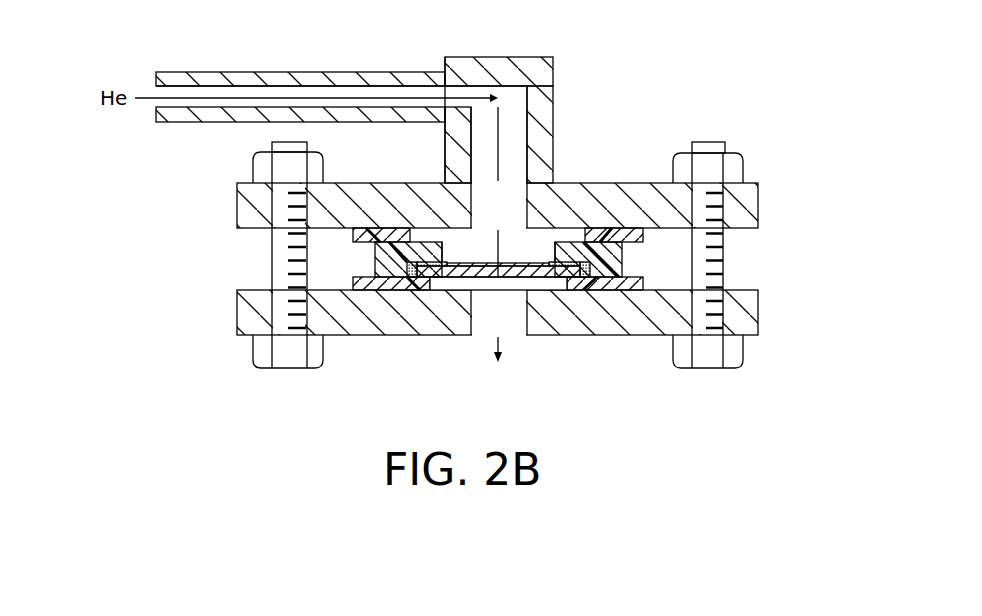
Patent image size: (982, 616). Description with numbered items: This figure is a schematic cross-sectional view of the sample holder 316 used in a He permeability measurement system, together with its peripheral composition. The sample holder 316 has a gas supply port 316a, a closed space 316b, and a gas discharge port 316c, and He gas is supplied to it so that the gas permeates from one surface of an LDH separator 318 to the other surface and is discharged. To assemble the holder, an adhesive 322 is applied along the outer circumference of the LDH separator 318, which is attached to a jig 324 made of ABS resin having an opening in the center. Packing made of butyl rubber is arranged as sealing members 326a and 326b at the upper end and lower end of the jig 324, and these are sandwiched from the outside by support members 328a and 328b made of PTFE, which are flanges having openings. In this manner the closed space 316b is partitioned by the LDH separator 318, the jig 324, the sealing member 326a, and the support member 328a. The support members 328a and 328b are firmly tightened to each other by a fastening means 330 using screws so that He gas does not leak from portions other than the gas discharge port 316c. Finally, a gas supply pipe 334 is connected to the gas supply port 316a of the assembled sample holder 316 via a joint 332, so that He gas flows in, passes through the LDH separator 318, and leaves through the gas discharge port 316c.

The sample holder 316 is at (684, 59).
The gas supply port 316a is at (531, 217).
The closed space 316b is at (467, 251).
The gas discharge port 316c is at (470, 323).
The LDH separator 318 is at (553, 240).
The adhesive 322 is at (586, 281).
The jig 324 is at (609, 256).
The sealing member 326a is at (645, 237).
The sealing member 326b is at (645, 282).
The support member 328a is at (748, 203).
The support member 328b is at (748, 309).
The fastening means 330 is at (707, 370).
The joint 332 is at (487, 68).
The gas supply pipe 334 is at (322, 76).